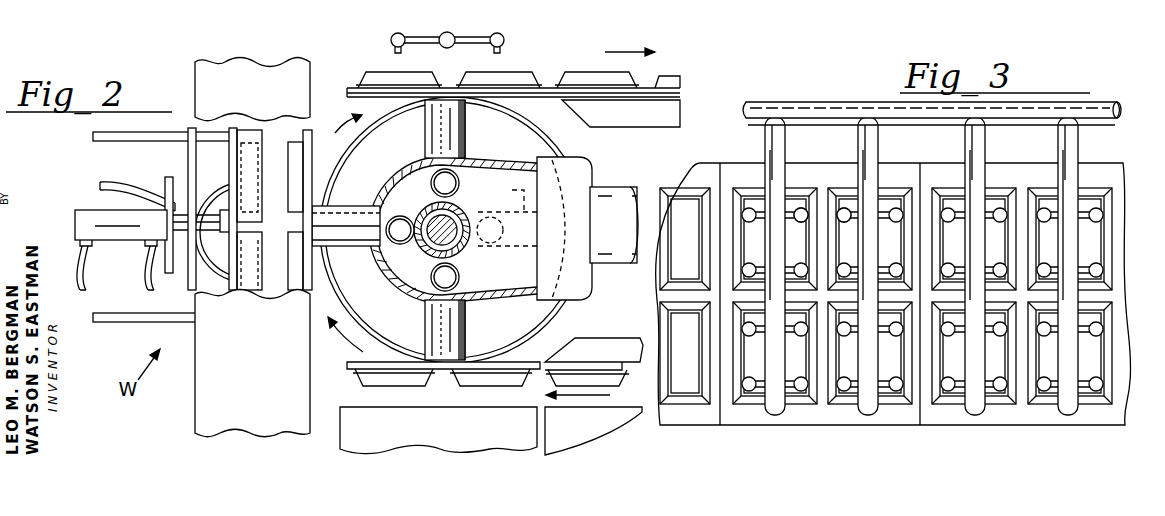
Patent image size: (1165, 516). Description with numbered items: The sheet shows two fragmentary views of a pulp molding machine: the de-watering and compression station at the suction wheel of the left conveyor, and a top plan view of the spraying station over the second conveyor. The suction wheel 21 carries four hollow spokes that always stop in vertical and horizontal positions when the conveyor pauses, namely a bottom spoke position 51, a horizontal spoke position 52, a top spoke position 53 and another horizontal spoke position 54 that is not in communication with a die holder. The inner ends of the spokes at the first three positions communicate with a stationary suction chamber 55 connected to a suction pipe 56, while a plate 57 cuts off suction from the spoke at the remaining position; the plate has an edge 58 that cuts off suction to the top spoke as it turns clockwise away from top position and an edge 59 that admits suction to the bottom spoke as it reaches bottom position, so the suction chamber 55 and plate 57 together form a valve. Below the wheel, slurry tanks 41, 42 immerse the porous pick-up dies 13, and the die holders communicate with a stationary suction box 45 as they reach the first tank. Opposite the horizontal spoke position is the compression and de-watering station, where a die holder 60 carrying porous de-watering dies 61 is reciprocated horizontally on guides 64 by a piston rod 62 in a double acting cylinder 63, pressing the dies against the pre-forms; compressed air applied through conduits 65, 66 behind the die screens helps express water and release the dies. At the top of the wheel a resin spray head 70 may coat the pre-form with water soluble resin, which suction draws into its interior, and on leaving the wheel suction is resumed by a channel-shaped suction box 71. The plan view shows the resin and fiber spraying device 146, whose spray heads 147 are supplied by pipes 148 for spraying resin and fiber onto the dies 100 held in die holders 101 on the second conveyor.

In FIG. 2, the porous pick-up die 13 is at (581, 78).
In FIG. 2, the suction wheel 21 is at (515, 140).
In FIG. 2, the slurry tank 41 is at (580, 430).
In FIG. 2, the slurry tank 42 is at (406, 435).
In FIG. 2, the stationary suction box 45 is at (622, 340).
In FIG. 2, the bottom spoke position 51 is at (426, 328).
In FIG. 2, the horizontal spoke position 52 is at (353, 206).
In FIG. 2, the top spoke position 53 is at (426, 127).
In FIG. 2, the horizontal spoke position 54 is at (524, 212).
In FIG. 2, the stationary suction chamber 55 is at (403, 253).
In FIG. 2, the suction pipe 56 is at (622, 186).
In FIG. 2, the plate 57 is at (513, 273).
In FIG. 2, the plate edge 58 is at (458, 178).
In FIG. 2, the plate edge 59 is at (458, 272).
In FIG. 2, the die holder 60 is at (232, 128).
In FIG. 2, the porous de-watering die 61 is at (258, 143).
In FIG. 2, the piston rod 62 is at (222, 218).
In FIG. 2, the double acting cylinder 63 is at (112, 246).
In FIG. 2, the guides 64 is at (156, 142).
In FIG. 2, the conduit 65 is at (219, 184).
In FIG. 2, the conduit 66 is at (100, 186).
In FIG. 2, the resin spray head 70 is at (503, 42).
In FIG. 2, the channel-shaped suction box 71 is at (640, 128).
In FIG. 3, the die 100 is at (948, 208).
In FIG. 3, the die holder 101 is at (882, 425).
In FIG. 3, the resin and fiber spraying device 146 is at (768, 73).
In FIG. 3, the spray head 147 is at (846, 207).
In FIG. 3, the pipe 148 is at (788, 150).